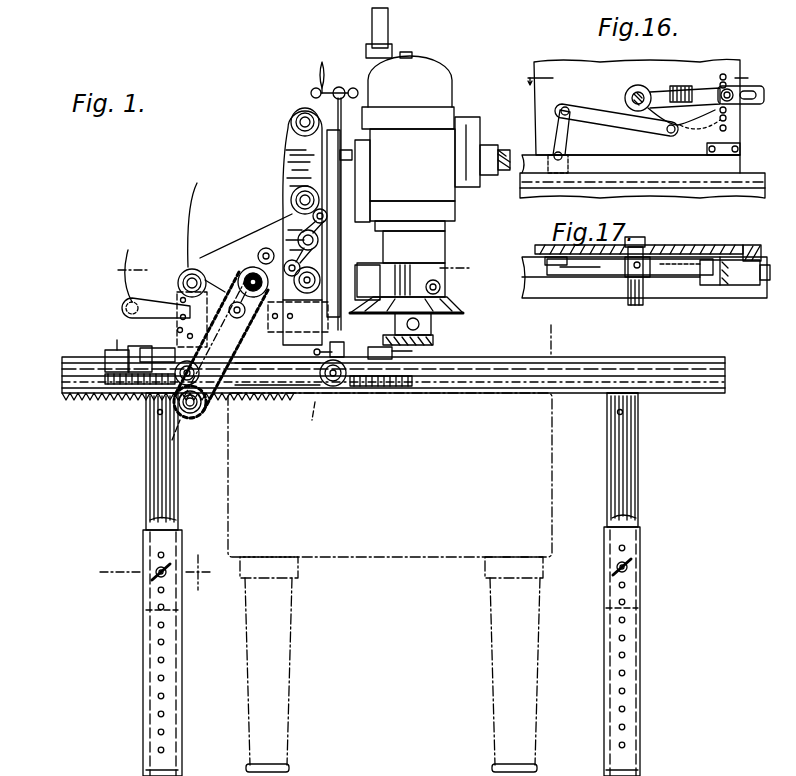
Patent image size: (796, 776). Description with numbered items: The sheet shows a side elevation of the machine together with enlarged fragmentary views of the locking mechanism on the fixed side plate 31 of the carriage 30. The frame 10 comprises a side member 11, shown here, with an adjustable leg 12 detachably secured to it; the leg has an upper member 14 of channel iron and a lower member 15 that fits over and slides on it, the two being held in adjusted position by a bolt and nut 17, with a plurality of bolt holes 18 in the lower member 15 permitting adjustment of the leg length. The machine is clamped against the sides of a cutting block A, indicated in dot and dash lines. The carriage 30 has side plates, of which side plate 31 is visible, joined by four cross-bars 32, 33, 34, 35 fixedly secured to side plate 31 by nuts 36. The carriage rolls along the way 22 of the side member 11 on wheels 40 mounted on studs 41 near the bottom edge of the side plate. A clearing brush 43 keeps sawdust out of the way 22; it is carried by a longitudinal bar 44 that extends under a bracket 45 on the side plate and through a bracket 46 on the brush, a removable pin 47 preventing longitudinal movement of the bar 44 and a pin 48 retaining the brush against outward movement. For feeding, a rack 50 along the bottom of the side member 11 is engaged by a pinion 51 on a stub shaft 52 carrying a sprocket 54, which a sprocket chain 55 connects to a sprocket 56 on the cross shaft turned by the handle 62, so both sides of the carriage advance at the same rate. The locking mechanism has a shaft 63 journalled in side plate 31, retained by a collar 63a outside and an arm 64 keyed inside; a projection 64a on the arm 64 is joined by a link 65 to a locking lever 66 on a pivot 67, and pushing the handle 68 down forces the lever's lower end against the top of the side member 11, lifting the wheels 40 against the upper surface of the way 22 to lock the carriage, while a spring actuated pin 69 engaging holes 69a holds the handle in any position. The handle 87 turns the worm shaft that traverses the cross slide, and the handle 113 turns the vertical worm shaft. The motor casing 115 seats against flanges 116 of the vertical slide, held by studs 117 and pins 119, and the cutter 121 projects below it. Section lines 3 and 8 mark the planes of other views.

In FIG. 1, the section line 3 is at (292, 270).
In FIG. 1, the section line 8 is at (157, 572).
In FIG. 1, the frame 10 is at (640, 392).
In FIG. 1, the side member 11 is at (725, 375).
In FIG. 16, the side member 11 is at (698, 181).
In FIG. 17, the side member 11 is at (644, 278).
In FIG. 1, the adjustable leg 12 is at (148, 497).
In FIG. 1, the upper member 14 is at (175, 495).
In FIG. 1, the lower member 15 is at (182, 698).
In FIG. 1, the nut 17 is at (150, 578).
In FIG. 16, the nut 17 is at (640, 73).
In FIG. 1, the bolt holes 18 is at (164, 625).
In FIG. 1, the way 22 is at (583, 372).
In FIG. 1, the carriage 30 is at (290, 140).
In FIG. 1, the side plate 31 is at (286, 160).
In FIG. 16, the side plate 31 is at (563, 70).
In FIG. 17, the side plate 31 is at (712, 250).
In FIG. 1, the cross-bar 32 is at (292, 110).
In FIG. 1, the cross-bar 33 is at (291, 198).
In FIG. 1, the cross-bar 34 is at (296, 312).
In FIG. 1, the cross-bar 35 is at (188, 270).
In FIG. 1, the nut 36 is at (305, 106).
In FIG. 1, the wheel 40 is at (220, 425).
In FIG. 1, the stud 41 is at (340, 388).
In FIG. 1, the clearing brush 43 is at (115, 395).
In FIG. 1, the longitudinal bar 44 is at (110, 349).
In FIG. 16, the longitudinal bar 44 is at (742, 158).
In FIG. 17, the longitudinal bar 44 is at (530, 285).
In FIG. 1, the bracket 45 is at (176, 310).
In FIG. 1, the bracket 46 is at (150, 340).
In FIG. 1, the removable pin 47 is at (342, 332).
In FIG. 1, the pin 48 is at (118, 348).
In FIG. 1, the rack 50 is at (62, 395).
In FIG. 1, the pinion 51 is at (195, 418).
In FIG. 1, the stub shaft 52 is at (172, 428).
In FIG. 1, the sprocket 54 is at (210, 412).
In FIG. 1, the sprocket chain 55 is at (212, 402).
In FIG. 1, the sprocket 56 is at (246, 268).
In FIG. 1, the handle 62 is at (260, 250).
In FIG. 16, the shaft 63 is at (642, 96).
In FIG. 17, the shaft 63 is at (642, 305).
In FIG. 17, the collar 63a is at (647, 244).
In FIG. 1, the arm 64 is at (215, 277).
In FIG. 16, the arm 64 is at (690, 94).
In FIG. 17, the arm 64 is at (698, 264).
In FIG. 16, the projection 64a is at (686, 132).
In FIG. 16, the link 65 is at (620, 125).
In FIG. 16, the locking lever 66 is at (566, 138).
In FIG. 16, the pivot 67 is at (553, 154).
In FIG. 1, the handle 68 is at (122, 302).
In FIG. 1, the spring actuated pin 69 is at (126, 266).
In FIG. 1, the holes 69a is at (165, 269).
In FIG. 1, the handle 87 is at (300, 232).
In FIG. 1, the handle 113 is at (325, 60).
In FIG. 1, the motor casing 115 is at (440, 92).
In FIG. 1, the flanges 116 is at (363, 175).
In FIG. 1, the stud 117 is at (378, 280).
In FIG. 1, the pin 119 is at (353, 223).
In FIG. 1, the cutter 121 is at (551, 328).
In FIG. 1, the cutting block A is at (390, 582).